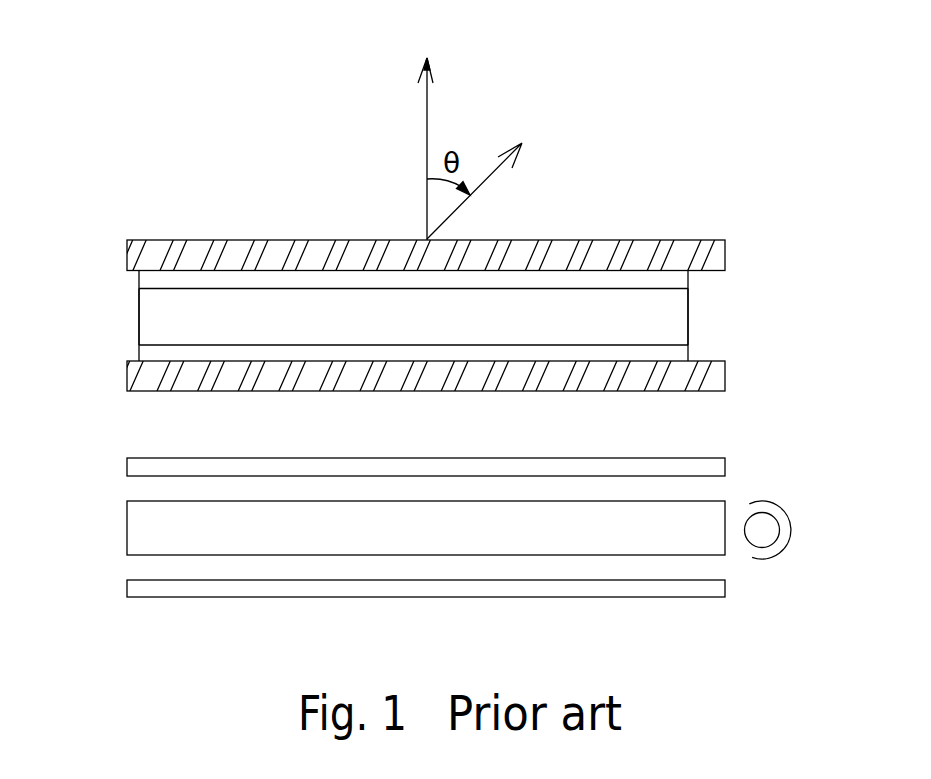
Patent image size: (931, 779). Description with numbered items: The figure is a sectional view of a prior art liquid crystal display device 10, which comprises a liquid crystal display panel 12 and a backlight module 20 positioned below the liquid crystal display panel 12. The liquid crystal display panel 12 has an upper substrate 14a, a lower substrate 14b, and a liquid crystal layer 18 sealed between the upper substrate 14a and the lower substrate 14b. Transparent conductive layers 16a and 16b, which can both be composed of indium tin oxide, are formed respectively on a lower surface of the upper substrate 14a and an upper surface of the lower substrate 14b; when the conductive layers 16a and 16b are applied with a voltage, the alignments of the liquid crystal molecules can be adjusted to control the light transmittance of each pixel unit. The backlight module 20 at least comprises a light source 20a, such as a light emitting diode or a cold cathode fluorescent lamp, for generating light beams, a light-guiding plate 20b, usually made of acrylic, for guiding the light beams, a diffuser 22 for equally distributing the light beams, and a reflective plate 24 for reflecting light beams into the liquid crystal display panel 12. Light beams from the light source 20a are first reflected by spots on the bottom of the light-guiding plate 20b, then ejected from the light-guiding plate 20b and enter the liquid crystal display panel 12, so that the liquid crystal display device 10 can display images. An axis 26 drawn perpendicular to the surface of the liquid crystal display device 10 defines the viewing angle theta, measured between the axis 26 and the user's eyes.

The liquid crystal display device 10 is at (717, 140).
The liquid crystal display panel 12 is at (793, 268).
The upper substrate 14a is at (155, 256).
The lower substrate 14b is at (155, 376).
The transparent conductive layer 16a is at (672, 281).
The transparent conductive layer 16b is at (672, 351).
The liquid crystal layer 18 is at (155, 308).
The backlight module 20 is at (768, 598).
The light source 20a is at (763, 530).
The light-guiding plate 20b is at (703, 525).
The diffuser 22 is at (155, 466).
The reflective plate 24 is at (155, 588).
The axis 26 is at (427, 101).